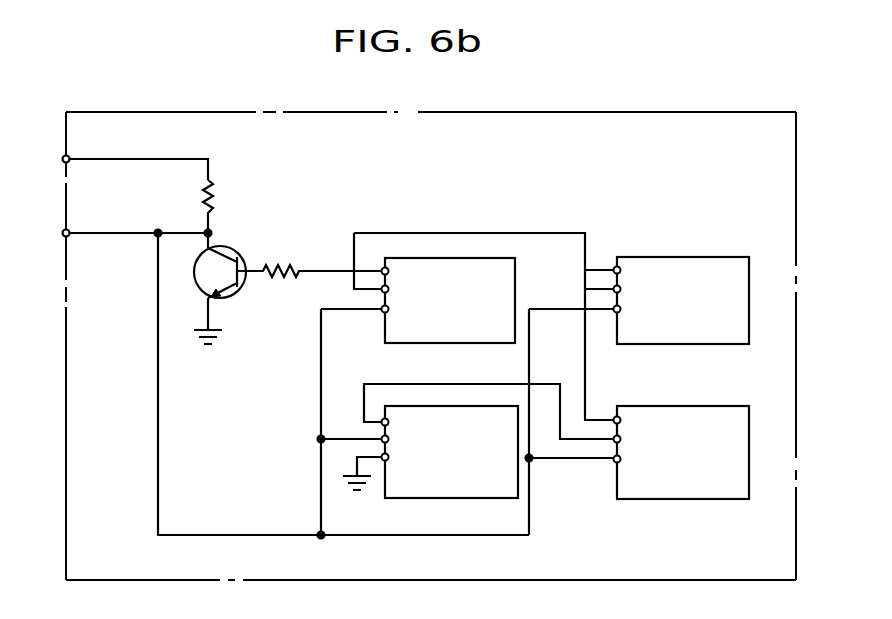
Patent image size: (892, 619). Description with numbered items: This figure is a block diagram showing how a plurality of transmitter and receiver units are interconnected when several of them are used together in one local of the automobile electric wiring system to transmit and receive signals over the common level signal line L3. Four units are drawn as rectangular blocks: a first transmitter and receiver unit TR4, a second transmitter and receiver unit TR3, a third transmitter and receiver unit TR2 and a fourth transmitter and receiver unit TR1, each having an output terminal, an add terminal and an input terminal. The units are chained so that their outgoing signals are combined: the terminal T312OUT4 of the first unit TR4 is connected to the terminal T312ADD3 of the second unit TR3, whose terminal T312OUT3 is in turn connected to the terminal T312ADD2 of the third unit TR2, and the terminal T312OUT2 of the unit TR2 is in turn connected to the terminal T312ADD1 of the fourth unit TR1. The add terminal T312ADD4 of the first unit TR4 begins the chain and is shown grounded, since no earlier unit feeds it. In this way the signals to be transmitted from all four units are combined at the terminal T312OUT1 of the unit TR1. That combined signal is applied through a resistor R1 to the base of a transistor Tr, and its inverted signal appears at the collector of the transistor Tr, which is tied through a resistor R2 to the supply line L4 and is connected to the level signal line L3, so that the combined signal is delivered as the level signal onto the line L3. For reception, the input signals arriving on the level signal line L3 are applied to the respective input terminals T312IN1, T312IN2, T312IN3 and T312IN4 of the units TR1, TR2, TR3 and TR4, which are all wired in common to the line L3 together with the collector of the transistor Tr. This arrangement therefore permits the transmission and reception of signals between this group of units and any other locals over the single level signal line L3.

The supply line L4 is at (119, 163).
The level signal line L3 is at (121, 234).
The resistor R2 is at (222, 193).
The transistor Tr is at (233, 249).
The resistor R1 is at (283, 268).
The fourth transmitter and receiver unit TR1 is at (515, 292).
The third transmitter and receiver unit TR2 is at (749, 322).
The second transmitter and receiver unit TR3 is at (720, 499).
The first transmitter and receiver unit TR4 is at (518, 483).
The output terminal of TR1 T312OUT1 is at (384, 267).
The add terminal of TR1 T312ADD1 is at (384, 292).
The input terminal of TR1 T312IN1 is at (384, 311).
The output terminal of TR2 T312OUT2 is at (612, 268).
The add terminal of TR2 T312ADD2 is at (616, 289).
The input terminal of TR2 T312IN2 is at (616, 312).
The output terminal of TR3 T312OUT3 is at (616, 419).
The add terminal of TR3 T312ADD3 is at (616, 441).
The input terminal of TR3 T312IN3 is at (618, 462).
The output terminal of TR4 T312OUT4 is at (388, 419).
The add terminal of TR4 T312ADD4 is at (385, 461).
The input terminal of TR4 T312IN4 is at (382, 439).